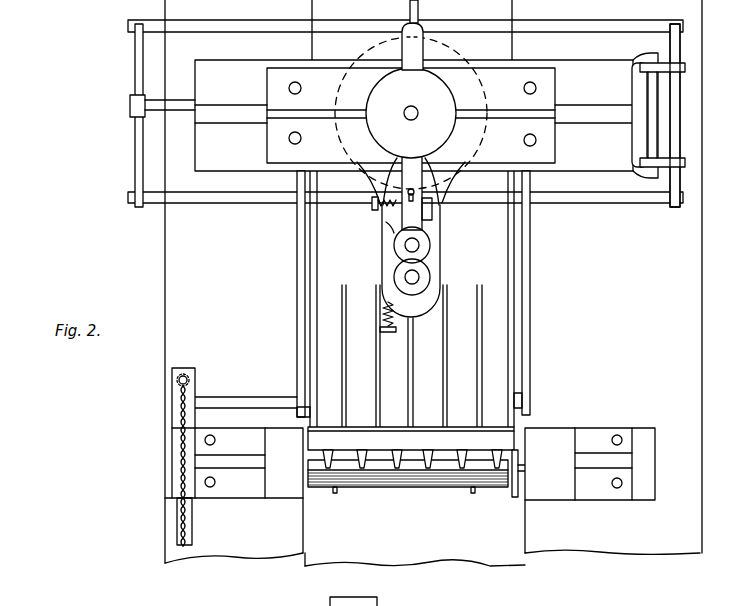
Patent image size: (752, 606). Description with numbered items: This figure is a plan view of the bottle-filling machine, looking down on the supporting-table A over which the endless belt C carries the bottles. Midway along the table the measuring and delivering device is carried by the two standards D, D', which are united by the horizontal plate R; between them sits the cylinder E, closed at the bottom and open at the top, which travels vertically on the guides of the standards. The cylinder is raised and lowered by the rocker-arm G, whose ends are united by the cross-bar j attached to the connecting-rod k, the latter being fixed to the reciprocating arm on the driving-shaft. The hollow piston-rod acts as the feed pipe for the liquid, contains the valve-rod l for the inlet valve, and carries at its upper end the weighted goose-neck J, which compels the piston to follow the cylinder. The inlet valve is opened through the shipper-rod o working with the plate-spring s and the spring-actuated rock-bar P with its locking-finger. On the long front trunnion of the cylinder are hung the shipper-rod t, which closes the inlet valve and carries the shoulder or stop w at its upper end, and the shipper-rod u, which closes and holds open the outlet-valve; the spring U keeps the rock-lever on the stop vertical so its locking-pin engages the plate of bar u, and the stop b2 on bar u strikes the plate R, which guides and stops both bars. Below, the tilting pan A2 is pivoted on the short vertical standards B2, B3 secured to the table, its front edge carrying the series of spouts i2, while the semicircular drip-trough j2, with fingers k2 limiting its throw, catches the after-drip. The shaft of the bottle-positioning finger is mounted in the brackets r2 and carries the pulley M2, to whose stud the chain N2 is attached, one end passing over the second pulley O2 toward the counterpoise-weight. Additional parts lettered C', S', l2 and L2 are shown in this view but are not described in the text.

The supporting-table A is at (433, 281).
The tilting pan A2 is at (412, 213).
The short vertical arm or standard B2 is at (249, 463).
The short vertical arm or standard B3 is at (590, 464).
The endless belt C is at (432, 305).
The upper cross rail C' is at (405, 20).
The standard D is at (606, 115).
The standard D' is at (414, 115).
The cylinder E is at (411, 113).
The rocker-arm G is at (405, 202).
The goose-neck J is at (440, 35).
The cross-bar j is at (132, 100).
The connecting-rod k is at (170, 100).
The valve-rod l is at (658, 115).
The plate-spring s is at (411, 190).
The shipper-rod o is at (432, 210).
The set screw S' is at (369, 214).
The spring-actuated rock-bar P is at (391, 226).
The horizontal plate R is at (411, 261).
The shoulder or stop w is at (426, 243).
The shipper-rod t is at (405, 246).
The shipper-rod u is at (421, 278).
The stop b2 is at (405, 278).
The spring U is at (388, 326).
The spouts i2 is at (412, 369).
The brackets r2 is at (300, 301).
The semicircular drip-trough j2 is at (384, 476).
The fingers k2 is at (335, 494).
The end plate l2 is at (509, 498).
The bar L2 is at (246, 398).
The chain N2 is at (186, 369).
The pulley M2 is at (172, 403).
The second pulley O2 is at (192, 524).